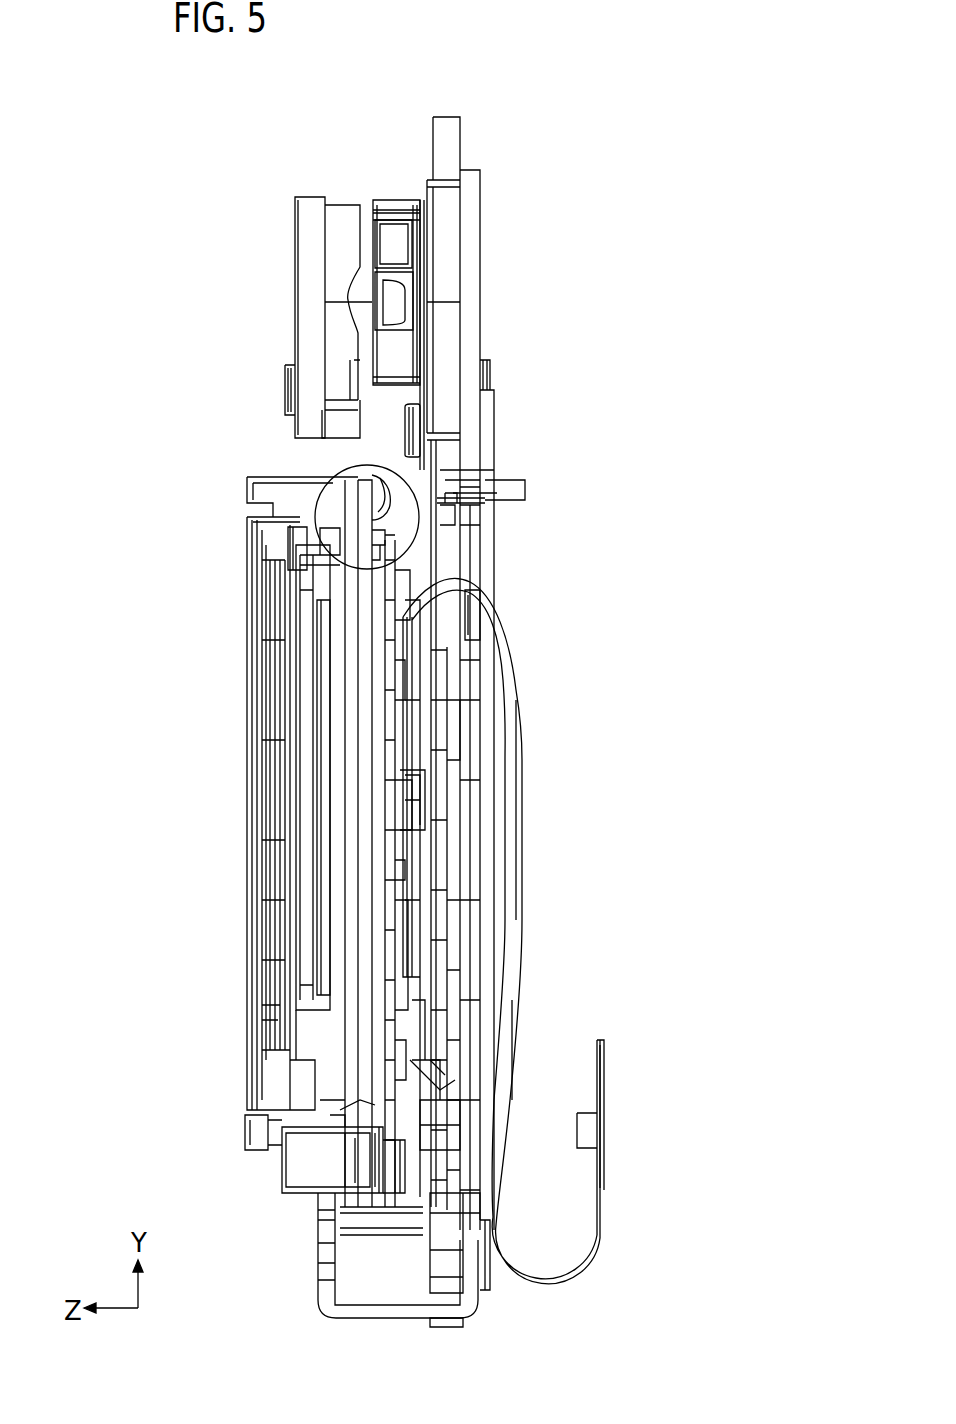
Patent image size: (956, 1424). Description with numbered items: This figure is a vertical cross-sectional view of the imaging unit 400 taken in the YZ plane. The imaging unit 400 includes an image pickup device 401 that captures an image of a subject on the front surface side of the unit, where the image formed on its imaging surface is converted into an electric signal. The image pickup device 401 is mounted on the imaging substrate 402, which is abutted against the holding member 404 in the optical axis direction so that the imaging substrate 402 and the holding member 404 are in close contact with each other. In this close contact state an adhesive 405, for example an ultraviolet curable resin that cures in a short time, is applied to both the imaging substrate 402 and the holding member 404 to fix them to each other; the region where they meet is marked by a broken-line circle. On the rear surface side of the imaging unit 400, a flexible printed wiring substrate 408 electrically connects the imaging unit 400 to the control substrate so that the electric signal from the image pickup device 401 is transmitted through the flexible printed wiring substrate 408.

The imaging unit 400 is at (181, 180).
The image pickup device 401 is at (280, 547).
The imaging substrate 402 is at (336, 480).
The holding member 404 is at (382, 462).
The adhesive 405 is at (385, 507).
The flexible printed wiring substrate 408 is at (520, 843).